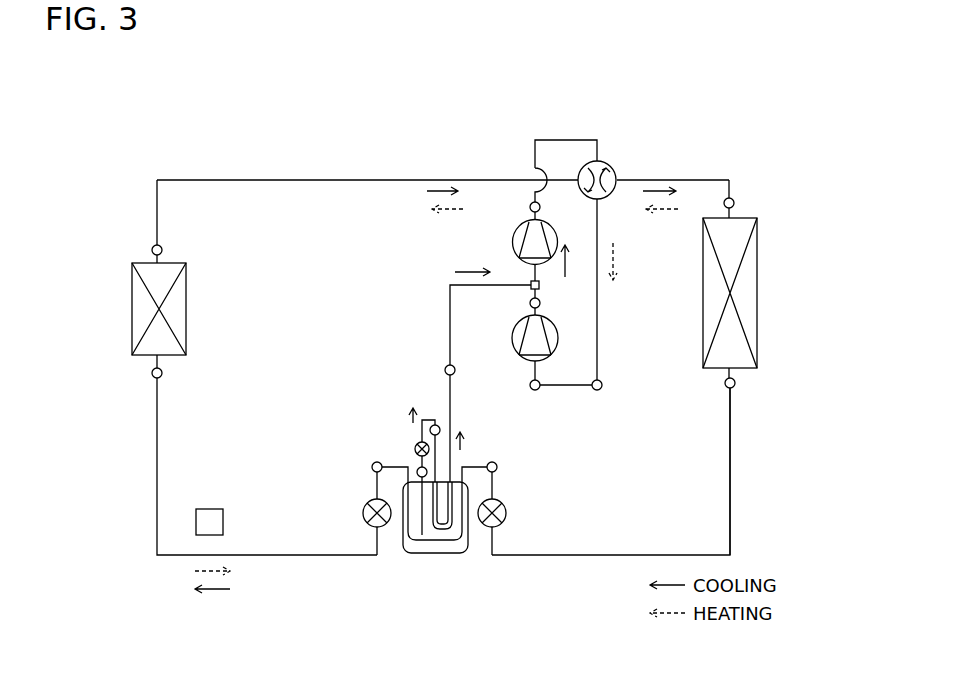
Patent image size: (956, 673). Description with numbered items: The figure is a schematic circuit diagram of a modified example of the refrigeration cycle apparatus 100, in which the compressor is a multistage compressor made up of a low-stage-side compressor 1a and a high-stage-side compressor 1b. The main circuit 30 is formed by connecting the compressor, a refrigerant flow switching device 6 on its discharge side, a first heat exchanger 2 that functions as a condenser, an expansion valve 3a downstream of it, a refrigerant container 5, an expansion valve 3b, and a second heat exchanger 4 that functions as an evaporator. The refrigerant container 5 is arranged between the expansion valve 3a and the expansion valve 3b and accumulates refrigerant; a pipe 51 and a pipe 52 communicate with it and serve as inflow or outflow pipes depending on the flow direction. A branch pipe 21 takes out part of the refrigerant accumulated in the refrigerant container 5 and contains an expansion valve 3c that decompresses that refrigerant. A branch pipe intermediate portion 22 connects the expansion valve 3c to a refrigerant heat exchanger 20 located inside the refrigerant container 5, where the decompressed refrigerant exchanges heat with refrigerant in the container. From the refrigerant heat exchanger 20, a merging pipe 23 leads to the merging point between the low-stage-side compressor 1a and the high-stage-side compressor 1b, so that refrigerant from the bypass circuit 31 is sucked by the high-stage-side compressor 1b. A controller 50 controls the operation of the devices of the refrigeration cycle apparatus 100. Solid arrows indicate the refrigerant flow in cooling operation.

The refrigeration cycle apparatus 100 is at (152, 162).
The second heat exchanger 4 is at (186, 290).
The first heat exchanger 2 is at (757, 286).
The refrigerant flow switching device 6 is at (612, 166).
The low-stage-side compressor 1a is at (513, 318).
The high-stage-side compressor 1b is at (512, 242).
The merging pipe 23 is at (450, 330).
The bypass circuit 31 is at (473, 401).
The branch pipe intermediate portion 22 is at (434, 420).
The expansion valve (third pressure reducing device) 3c is at (416, 445).
The main circuit 30 is at (749, 465).
The controller 50 is at (207, 509).
The expansion valve (second pressure reducing device) 3b is at (364, 506).
The expansion valve (first pressure reducing device) 3a is at (506, 508).
The refrigerant container 5 is at (455, 553).
The pipe (second pipe) 52 is at (414, 544).
The pipe (first pipe) 51 is at (458, 544).
The refrigerant heat exchanger 20 is at (443, 540).
The branch pipe 21 is at (423, 542).